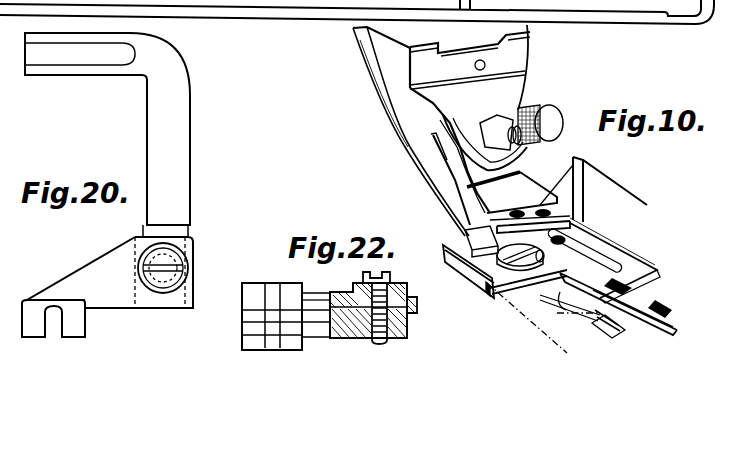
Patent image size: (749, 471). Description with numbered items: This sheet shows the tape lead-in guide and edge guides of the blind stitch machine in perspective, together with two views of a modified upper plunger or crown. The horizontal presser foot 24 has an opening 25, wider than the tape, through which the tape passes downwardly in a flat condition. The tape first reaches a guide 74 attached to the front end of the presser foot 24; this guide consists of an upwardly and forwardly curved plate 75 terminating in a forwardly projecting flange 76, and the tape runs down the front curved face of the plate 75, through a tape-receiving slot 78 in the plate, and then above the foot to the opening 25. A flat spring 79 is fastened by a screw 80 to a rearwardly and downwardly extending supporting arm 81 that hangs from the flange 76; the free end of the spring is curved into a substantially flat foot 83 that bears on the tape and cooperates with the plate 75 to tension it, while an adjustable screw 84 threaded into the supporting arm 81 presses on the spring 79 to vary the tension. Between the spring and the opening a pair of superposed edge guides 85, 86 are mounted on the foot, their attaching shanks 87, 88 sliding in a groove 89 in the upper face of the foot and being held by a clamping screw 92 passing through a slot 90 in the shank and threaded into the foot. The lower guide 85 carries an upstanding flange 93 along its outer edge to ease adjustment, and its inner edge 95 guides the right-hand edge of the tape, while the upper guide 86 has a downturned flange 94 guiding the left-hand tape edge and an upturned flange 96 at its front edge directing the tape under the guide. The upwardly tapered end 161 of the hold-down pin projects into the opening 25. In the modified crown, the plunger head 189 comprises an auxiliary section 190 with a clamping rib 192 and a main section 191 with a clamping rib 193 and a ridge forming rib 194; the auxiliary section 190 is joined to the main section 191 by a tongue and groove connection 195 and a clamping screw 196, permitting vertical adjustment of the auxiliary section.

In FIG. 10, the presser foot 24 is at (605, 190).
In FIG. 10, the opening 25 is at (617, 322).
In FIG. 10, the guide 74 is at (376, 111).
In FIG. 10, the curved plate 75 is at (402, 126).
In FIG. 10, the flange 76 is at (362, 33).
In FIG. 10, the tape-receiving slot 78 is at (424, 143).
In FIG. 10, the flat spring 79 is at (462, 172).
In FIG. 10, the screw 80 is at (486, 64).
In FIG. 10, the supporting arm 81 is at (510, 88).
In FIG. 10, the foot 83 is at (528, 185).
In FIG. 10, the adjustable screw 84 is at (553, 115).
In FIG. 10, the edge guide 85 is at (486, 284).
In FIG. 10, the edge guide 86 is at (640, 263).
In FIG. 10, the attaching shank 87 is at (488, 296).
In FIG. 10, the attaching shank 88 is at (528, 292).
In FIG. 10, the groove 89 is at (503, 296).
In FIG. 10, the slot 90 is at (626, 255).
In FIG. 10, the clamping screw 92 is at (465, 236).
In FIG. 10, the upstanding flange 93 is at (460, 264).
In FIG. 10, the downturned flange 94 is at (650, 273).
In FIG. 10, the inner edge 95 is at (570, 306).
In FIG. 10, the upturned flange 96 is at (590, 162).
In FIG. 10, the upwardly tapered portion 161 is at (643, 263).
In FIG. 20, the plunger head 189 is at (198, 230).
In FIG. 20, the auxiliary section 190 is at (126, 314).
In FIG. 22, the auxiliary section 190 is at (338, 286).
In FIG. 22, the main section 191 is at (352, 326).
In FIG. 20, the clamping rib 192 is at (72, 333).
In FIG. 22, the clamping rib 192 is at (283, 284).
In FIG. 22, the clamping rib 193 is at (305, 343).
In FIG. 22, the ridge forming rib 194 is at (315, 316).
In FIG. 22, the tongue and groove connection 195 is at (413, 305).
In FIG. 20, the clamping screw 196 is at (170, 262).
In FIG. 22, the clamping screw 196 is at (388, 286).